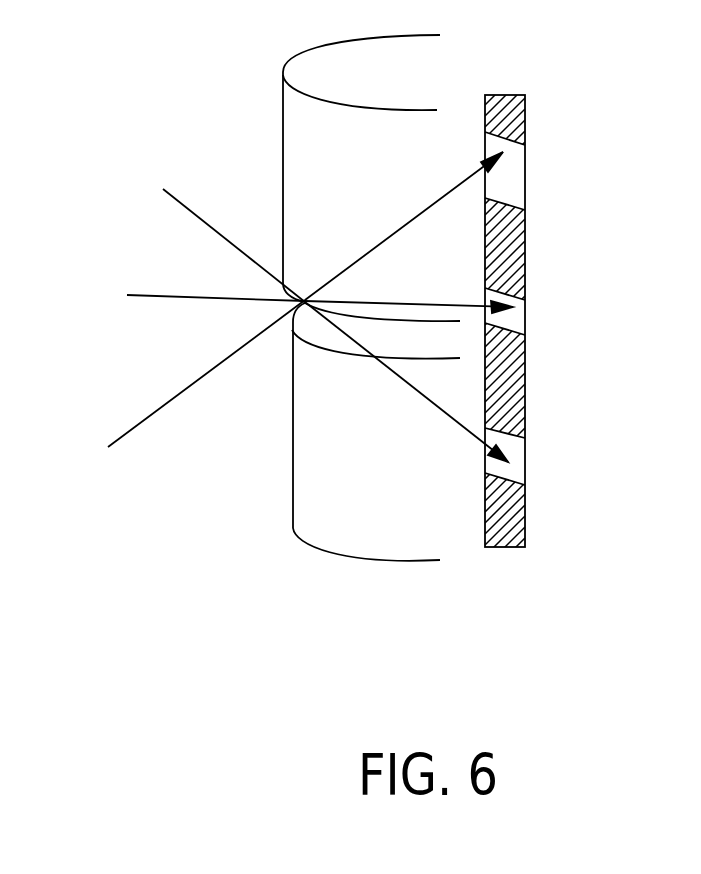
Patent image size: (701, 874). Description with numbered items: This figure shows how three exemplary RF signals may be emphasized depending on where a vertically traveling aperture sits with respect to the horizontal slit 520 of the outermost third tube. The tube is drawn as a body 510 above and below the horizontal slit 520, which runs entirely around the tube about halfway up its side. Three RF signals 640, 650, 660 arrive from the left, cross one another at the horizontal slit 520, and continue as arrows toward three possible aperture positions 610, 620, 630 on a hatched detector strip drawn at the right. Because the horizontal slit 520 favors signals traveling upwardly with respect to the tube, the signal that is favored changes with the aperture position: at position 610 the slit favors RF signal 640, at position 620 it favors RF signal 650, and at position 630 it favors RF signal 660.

The body 510 is at (310, 153).
The horizontal slit 520 is at (313, 330).
The position 610 is at (527, 462).
The position 620 is at (525, 317).
The position 630 is at (525, 171).
The RF signal 640 is at (198, 217).
The RF signal 650 is at (143, 296).
The RF signal 660 is at (137, 424).